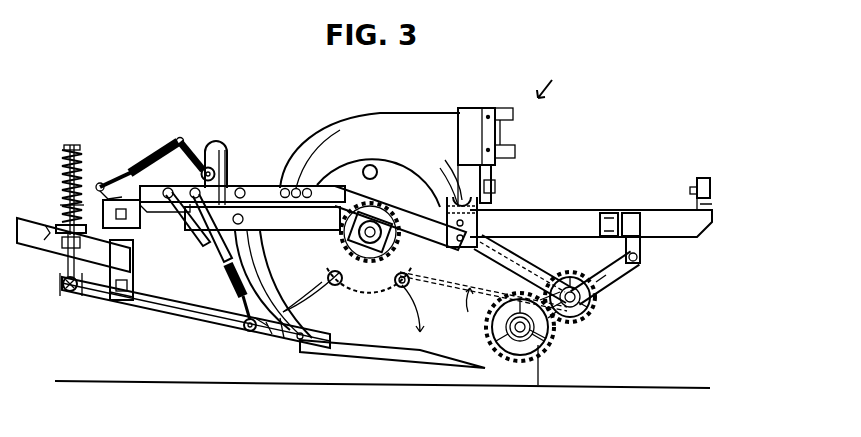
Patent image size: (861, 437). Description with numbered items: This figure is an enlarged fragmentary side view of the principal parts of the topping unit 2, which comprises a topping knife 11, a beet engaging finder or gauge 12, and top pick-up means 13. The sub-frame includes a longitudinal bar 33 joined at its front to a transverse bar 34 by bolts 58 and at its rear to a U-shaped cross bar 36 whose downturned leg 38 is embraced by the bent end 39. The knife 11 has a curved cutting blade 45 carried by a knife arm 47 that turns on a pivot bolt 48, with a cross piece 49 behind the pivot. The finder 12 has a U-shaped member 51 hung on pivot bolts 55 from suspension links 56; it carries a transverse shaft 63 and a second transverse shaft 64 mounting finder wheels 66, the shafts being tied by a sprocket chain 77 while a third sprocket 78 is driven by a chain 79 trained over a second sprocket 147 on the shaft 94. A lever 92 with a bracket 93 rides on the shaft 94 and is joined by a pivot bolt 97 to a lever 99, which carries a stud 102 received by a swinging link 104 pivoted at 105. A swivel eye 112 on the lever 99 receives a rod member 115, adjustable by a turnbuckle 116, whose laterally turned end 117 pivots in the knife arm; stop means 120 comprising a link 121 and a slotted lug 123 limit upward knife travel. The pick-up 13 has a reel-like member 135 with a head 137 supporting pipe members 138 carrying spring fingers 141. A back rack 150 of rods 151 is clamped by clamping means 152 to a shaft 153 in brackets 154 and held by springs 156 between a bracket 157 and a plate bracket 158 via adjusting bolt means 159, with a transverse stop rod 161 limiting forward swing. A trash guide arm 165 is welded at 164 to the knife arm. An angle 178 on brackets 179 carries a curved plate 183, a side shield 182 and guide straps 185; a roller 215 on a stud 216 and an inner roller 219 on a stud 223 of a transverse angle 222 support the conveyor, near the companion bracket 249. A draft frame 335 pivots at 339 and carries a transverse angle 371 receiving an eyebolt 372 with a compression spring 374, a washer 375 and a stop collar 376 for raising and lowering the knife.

The topping unit 2 is at (551, 79).
The topping knife 11 is at (164, 324).
The beet engaging finder or gauge 12 is at (561, 352).
The top pick-up means 13 is at (401, 103).
The longitudinal bar 33 is at (138, 228).
The transverse bar 34 is at (630, 212).
The cross bar 36 is at (156, 305).
The downturned leg 38 is at (114, 288).
The right-angle bend 39 is at (103, 200).
The cutting blade 45 is at (464, 366).
The knife arm 47 is at (268, 334).
The pivot bolt 48 is at (122, 300).
The cross piece 49 is at (64, 298).
The U-shaped member 51 is at (598, 290).
The pivot bolt 55 is at (620, 272).
The suspension link 56 is at (641, 257).
The bolt 58 is at (616, 212).
The transverse shaft 63 is at (522, 346).
The second transverse shaft 64 is at (582, 272).
The finder wheel 66 is at (592, 306).
The sprocket chain 77 is at (539, 375).
The third sprocket 78 is at (558, 320).
The chain 79 is at (452, 287).
The lever 92 is at (505, 254).
The bracket 93 is at (405, 214).
The shaft 94 is at (358, 224).
The pivot bolt 97 is at (302, 188).
The lever 99 is at (222, 162).
The stud 102 is at (227, 190).
The swinging link 104 is at (244, 189).
The pivot 105 is at (243, 219).
The swivel eye 112 is at (185, 191).
The rod member 115 is at (220, 269).
The turnbuckle 116 is at (234, 291).
The laterally turned lower end 117 is at (248, 332).
The stop means 120 is at (166, 200).
The link 121 is at (192, 226).
The lug 123 is at (214, 246).
The reel-like member 135 is at (404, 155).
The rotatable head 137 is at (346, 170).
The pipe member 138 is at (370, 165).
The spring finger 141 is at (268, 185).
The second sprocket 147 is at (370, 262).
The back rack 150 is at (243, 319).
The rod 151 is at (283, 335).
The clamping means 152 is at (192, 160).
The shaft 153 is at (224, 150).
The bracket 154 is at (198, 150).
The spring 156 is at (150, 163).
The bracket 157 is at (176, 139).
The plate bracket 158 is at (98, 183).
The adjusting bolt means 159 is at (108, 178).
The transverse stop rod 161 is at (210, 166).
The welded attachment 164 is at (338, 346).
The trash guide arm 165 is at (302, 340).
The angle 178 is at (458, 152).
The bracket 179 is at (480, 172).
The side shield 182 is at (424, 118).
The curved forwardly diverging plate 183 is at (470, 118).
The guide strap 185 is at (508, 110).
The roller 215 is at (491, 177).
The stud 216 is at (497, 186).
The inner roller 219 is at (705, 178).
The transverse angle 222 is at (712, 196).
The stud 223 is at (690, 190).
The companion bracket 249 is at (467, 222).
The draft frame 335 is at (40, 257).
The pivot 339 is at (134, 262).
The transverse angle 371 is at (60, 206).
The eyebolt 372 is at (62, 285).
The compression spring 374 is at (64, 188).
The washer 375 is at (68, 162).
The stop collar 376 is at (58, 226).